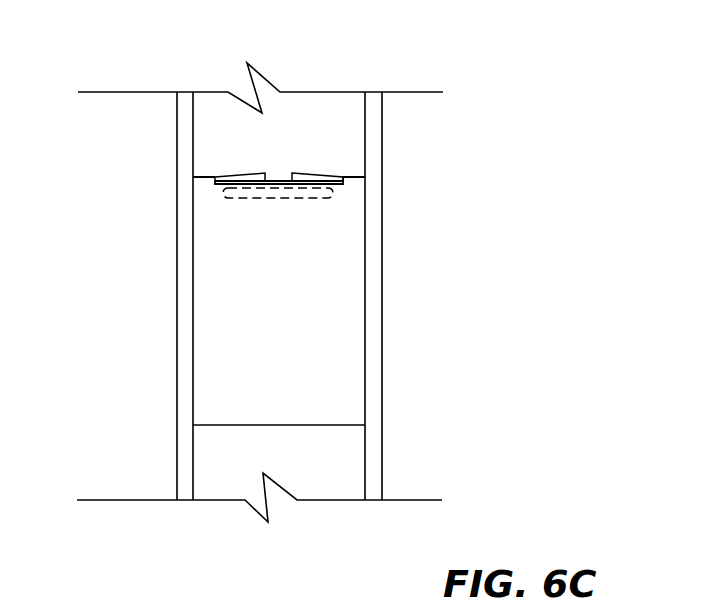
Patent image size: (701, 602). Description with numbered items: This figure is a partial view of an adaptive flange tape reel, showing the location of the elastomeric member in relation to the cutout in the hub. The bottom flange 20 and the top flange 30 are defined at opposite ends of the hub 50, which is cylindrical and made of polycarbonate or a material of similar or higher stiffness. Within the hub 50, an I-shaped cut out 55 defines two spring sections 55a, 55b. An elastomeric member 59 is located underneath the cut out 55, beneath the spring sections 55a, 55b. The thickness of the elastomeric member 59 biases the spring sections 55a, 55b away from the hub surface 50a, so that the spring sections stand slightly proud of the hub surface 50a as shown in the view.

The bottom flange 20 is at (187, 493).
The top flange 30 is at (373, 493).
The hub 50 is at (345, 386).
The hub surface 50a is at (355, 177).
The I-shaped cut out 55 is at (283, 107).
The spring section 55a is at (235, 177).
The spring section 55b is at (279, 175).
The elastomeric member 59 is at (260, 196).